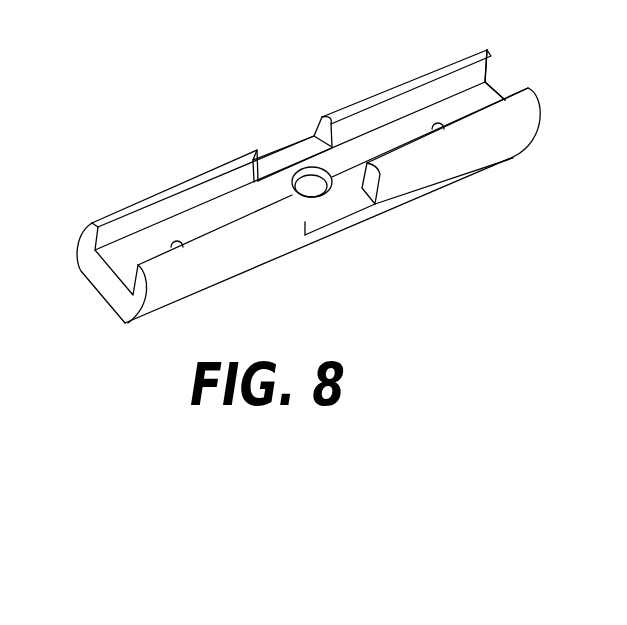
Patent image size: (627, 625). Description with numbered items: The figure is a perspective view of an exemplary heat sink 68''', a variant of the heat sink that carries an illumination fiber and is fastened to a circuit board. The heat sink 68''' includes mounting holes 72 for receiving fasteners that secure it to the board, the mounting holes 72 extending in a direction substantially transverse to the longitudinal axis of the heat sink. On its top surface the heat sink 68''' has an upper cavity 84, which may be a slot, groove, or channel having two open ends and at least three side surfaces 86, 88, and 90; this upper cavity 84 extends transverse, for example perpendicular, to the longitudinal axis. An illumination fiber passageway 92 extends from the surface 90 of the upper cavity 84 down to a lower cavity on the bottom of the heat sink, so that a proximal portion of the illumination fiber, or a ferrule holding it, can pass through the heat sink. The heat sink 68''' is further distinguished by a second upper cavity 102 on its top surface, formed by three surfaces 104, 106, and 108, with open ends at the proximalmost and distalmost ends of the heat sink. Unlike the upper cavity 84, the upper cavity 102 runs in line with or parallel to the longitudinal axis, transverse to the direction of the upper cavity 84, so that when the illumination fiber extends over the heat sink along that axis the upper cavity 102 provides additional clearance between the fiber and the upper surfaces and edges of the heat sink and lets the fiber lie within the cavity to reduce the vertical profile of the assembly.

The heat sink 68''' is at (203, 159).
The mounting holes 72 is at (436, 122).
The upper cavity 84 is at (279, 143).
The side surface 86 is at (304, 236).
The side surface 88 is at (370, 184).
The side surface 90 is at (331, 203).
The illumination fiber passageway 92 is at (306, 167).
The upper cavity 102 is at (502, 84).
The surface 104 is at (472, 122).
The surface 106 is at (458, 80).
The surface 108 is at (528, 88).